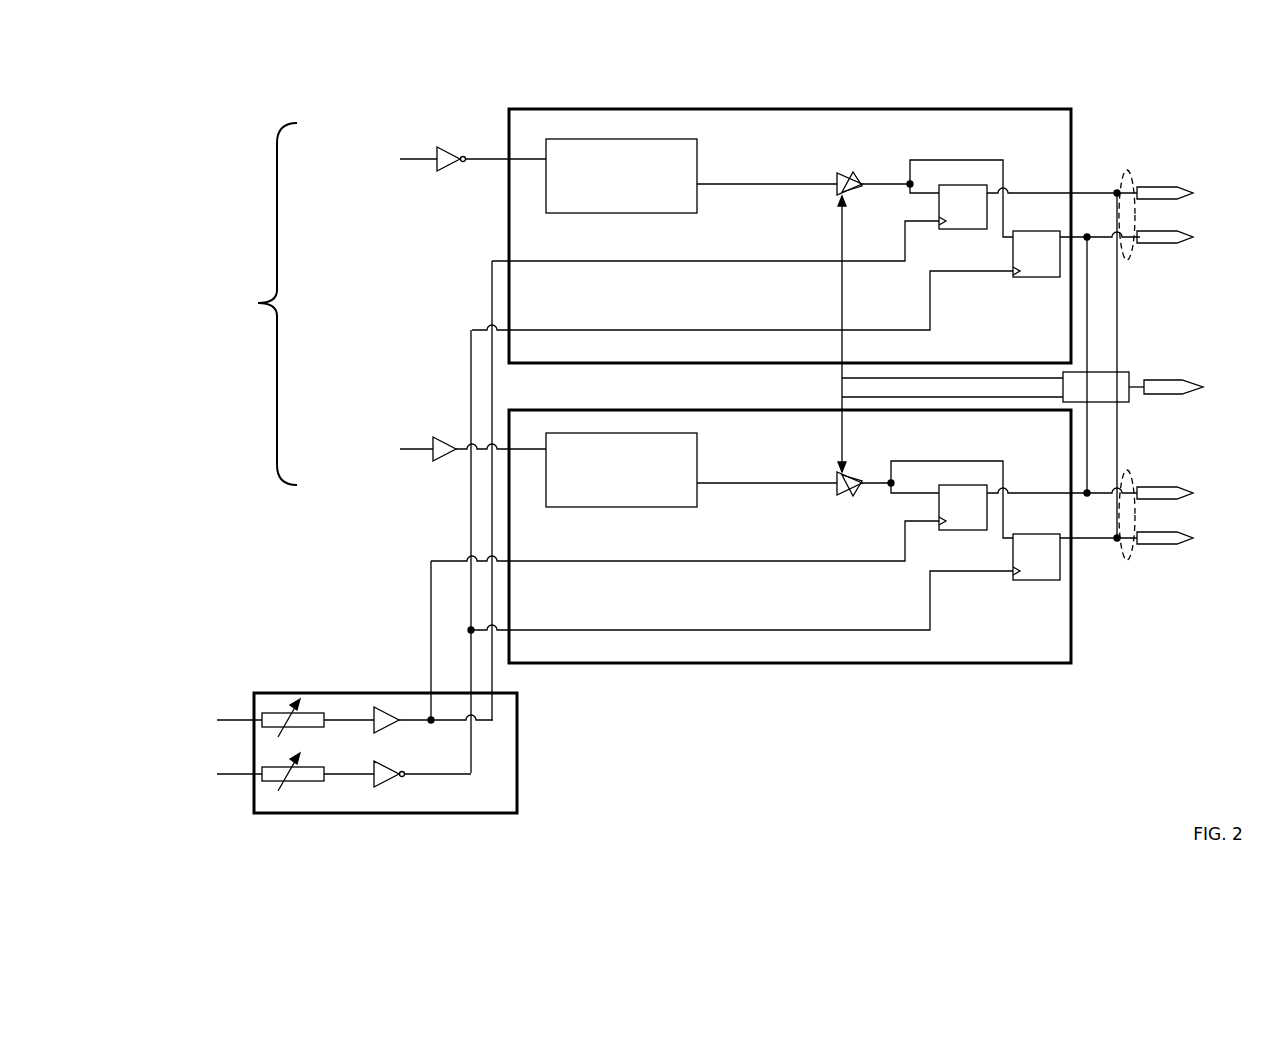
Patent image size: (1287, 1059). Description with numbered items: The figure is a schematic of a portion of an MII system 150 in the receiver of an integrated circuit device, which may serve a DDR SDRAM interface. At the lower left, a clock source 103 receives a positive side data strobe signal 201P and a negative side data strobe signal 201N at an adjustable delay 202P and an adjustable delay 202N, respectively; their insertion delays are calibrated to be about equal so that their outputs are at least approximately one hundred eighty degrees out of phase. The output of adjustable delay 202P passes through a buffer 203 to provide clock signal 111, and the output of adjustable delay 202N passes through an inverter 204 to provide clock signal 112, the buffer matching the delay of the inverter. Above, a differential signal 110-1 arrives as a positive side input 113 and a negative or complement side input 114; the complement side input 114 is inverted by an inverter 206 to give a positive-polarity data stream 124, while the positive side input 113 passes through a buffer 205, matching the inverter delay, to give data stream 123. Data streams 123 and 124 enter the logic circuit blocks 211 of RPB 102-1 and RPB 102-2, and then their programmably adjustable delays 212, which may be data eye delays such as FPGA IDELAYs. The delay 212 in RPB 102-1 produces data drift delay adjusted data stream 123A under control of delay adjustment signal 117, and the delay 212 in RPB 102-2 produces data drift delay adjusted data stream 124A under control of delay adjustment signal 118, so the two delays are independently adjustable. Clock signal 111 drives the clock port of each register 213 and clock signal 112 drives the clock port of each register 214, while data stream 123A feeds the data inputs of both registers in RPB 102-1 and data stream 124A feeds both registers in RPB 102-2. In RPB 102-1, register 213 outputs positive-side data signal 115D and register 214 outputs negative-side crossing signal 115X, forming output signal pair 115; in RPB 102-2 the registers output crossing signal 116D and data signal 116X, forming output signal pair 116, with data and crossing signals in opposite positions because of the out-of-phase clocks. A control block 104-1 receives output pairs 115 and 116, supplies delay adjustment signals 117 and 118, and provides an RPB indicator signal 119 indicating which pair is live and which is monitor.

The MII system 150 is at (1170, 85).
The RPB 102-2 is at (1075, 147).
The RPB 102-1 is at (1073, 630).
The logic circuit block 211 is at (621, 323).
The negative or complement side input 114 is at (409, 157).
The positive side input 113 is at (400, 448).
The data stream 124 is at (483, 157).
The data stream 123 is at (463, 447).
The data drift delay adjusted data stream 124A is at (880, 182).
The data drift delay adjusted data stream 123A is at (880, 482).
The programmably adjustable delay 212 is at (837, 195).
The register 213 is at (972, 231).
The register 214 is at (1040, 278).
The inverter 206 is at (437, 172).
The buffer 205 is at (428, 448).
The clock signal 112 is at (472, 535).
The clock signal 111 is at (430, 627).
The delay adjustment signal 118 is at (840, 378).
The delay adjustment signal 117 is at (840, 397).
The control block 104-1 is at (1135, 402).
The RPB indicator signal 119 is at (1160, 377).
The output crossing signal 116X is at (1152, 185).
The output data signal 116D is at (1173, 229).
The output signal pair 116 is at (1128, 258).
The positive-side data signal 115D is at (1140, 485).
The negative-side crossing signal 115X is at (1170, 532).
The output signal pair 115 is at (1128, 558).
The clock source 103 is at (283, 692).
The positive side data strobe signal 201P is at (218, 713).
The negative side data strobe signal 201N is at (218, 783).
The adjustable delay 202P is at (313, 730).
The adjustable delay 202N is at (313, 784).
The buffer 203 is at (393, 727).
The inverter 204 is at (393, 782).
The differential signal 110-1 is at (258, 303).